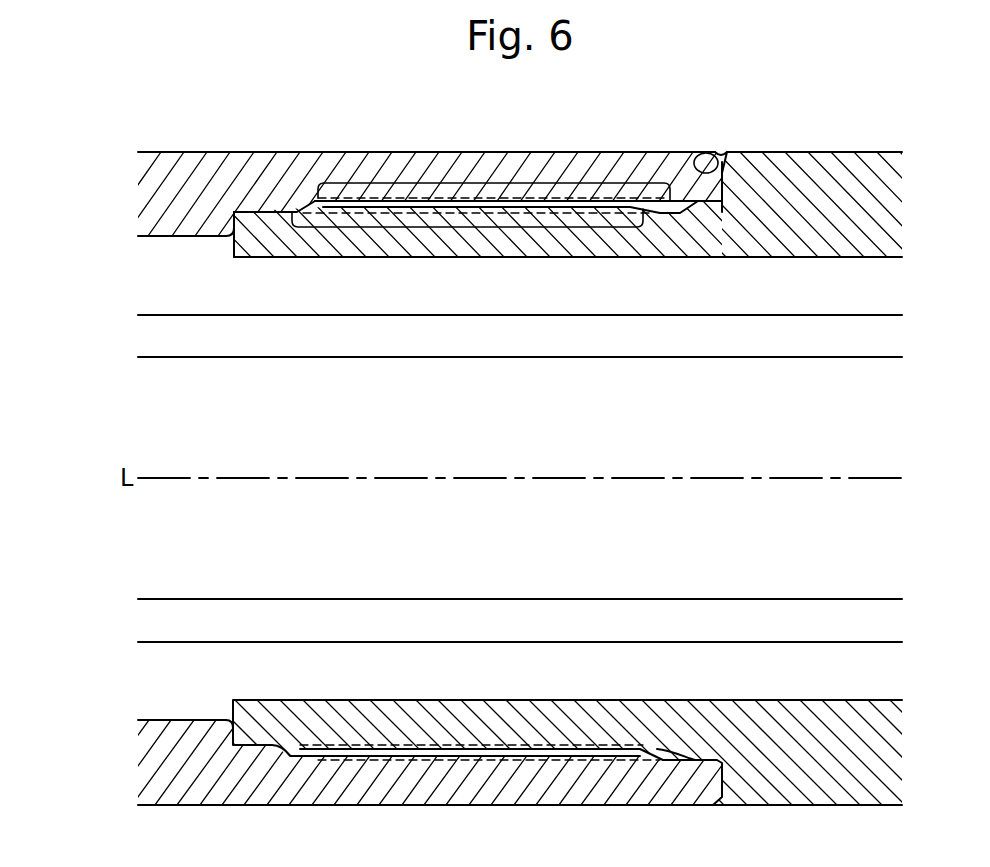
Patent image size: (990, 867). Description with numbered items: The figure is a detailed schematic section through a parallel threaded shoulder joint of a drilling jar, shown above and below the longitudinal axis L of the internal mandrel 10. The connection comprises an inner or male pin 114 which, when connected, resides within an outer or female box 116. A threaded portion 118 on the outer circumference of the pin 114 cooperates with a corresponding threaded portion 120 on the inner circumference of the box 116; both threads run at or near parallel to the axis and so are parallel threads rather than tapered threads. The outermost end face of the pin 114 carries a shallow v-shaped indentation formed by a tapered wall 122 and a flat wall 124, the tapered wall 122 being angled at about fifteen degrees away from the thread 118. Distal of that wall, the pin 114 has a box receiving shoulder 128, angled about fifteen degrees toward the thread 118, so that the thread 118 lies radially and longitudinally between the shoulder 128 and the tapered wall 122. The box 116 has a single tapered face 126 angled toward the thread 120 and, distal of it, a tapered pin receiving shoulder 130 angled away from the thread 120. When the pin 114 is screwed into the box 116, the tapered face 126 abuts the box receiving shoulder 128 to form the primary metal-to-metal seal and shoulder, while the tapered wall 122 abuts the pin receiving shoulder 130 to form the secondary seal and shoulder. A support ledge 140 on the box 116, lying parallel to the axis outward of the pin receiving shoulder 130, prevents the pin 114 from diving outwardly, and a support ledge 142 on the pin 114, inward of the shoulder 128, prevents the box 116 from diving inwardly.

The mandrel 10 is at (906, 309).
The pin 114 is at (375, 240).
The box 116 is at (582, 164).
The threaded portion 118 is at (470, 229).
The threaded portion 120 is at (493, 183).
The tapered wall 122 is at (244, 224).
The flat wall 124 is at (228, 250).
The tapered face 126 is at (701, 170).
The box receiving shoulder 128 is at (728, 156).
The pin receiving shoulder 130 is at (234, 222).
The support ledge 140 is at (263, 207).
The support ledge 142 is at (712, 210).